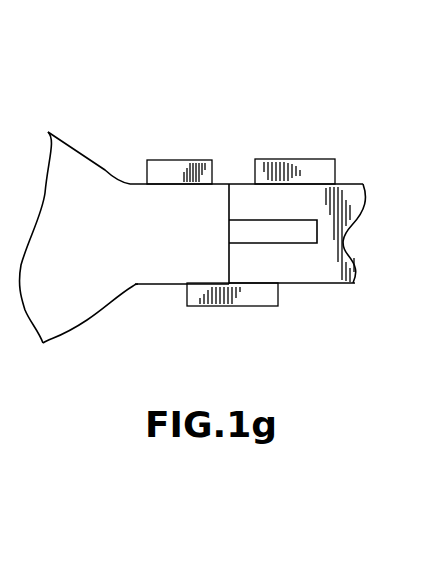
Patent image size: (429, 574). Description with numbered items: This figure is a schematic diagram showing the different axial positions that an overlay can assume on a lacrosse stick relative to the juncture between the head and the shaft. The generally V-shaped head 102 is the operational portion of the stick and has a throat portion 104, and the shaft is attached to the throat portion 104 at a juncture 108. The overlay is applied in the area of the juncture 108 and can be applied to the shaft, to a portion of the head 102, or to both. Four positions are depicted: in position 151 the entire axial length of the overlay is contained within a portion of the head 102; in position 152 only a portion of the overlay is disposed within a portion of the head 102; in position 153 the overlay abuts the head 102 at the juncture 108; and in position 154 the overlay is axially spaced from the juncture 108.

The head 102 is at (62, 132).
The throat portion 104 is at (148, 287).
The juncture 108 is at (231, 180).
The position 151 is at (170, 167).
The position 152 is at (243, 298).
The position 153 is at (288, 235).
The position 154 is at (317, 163).